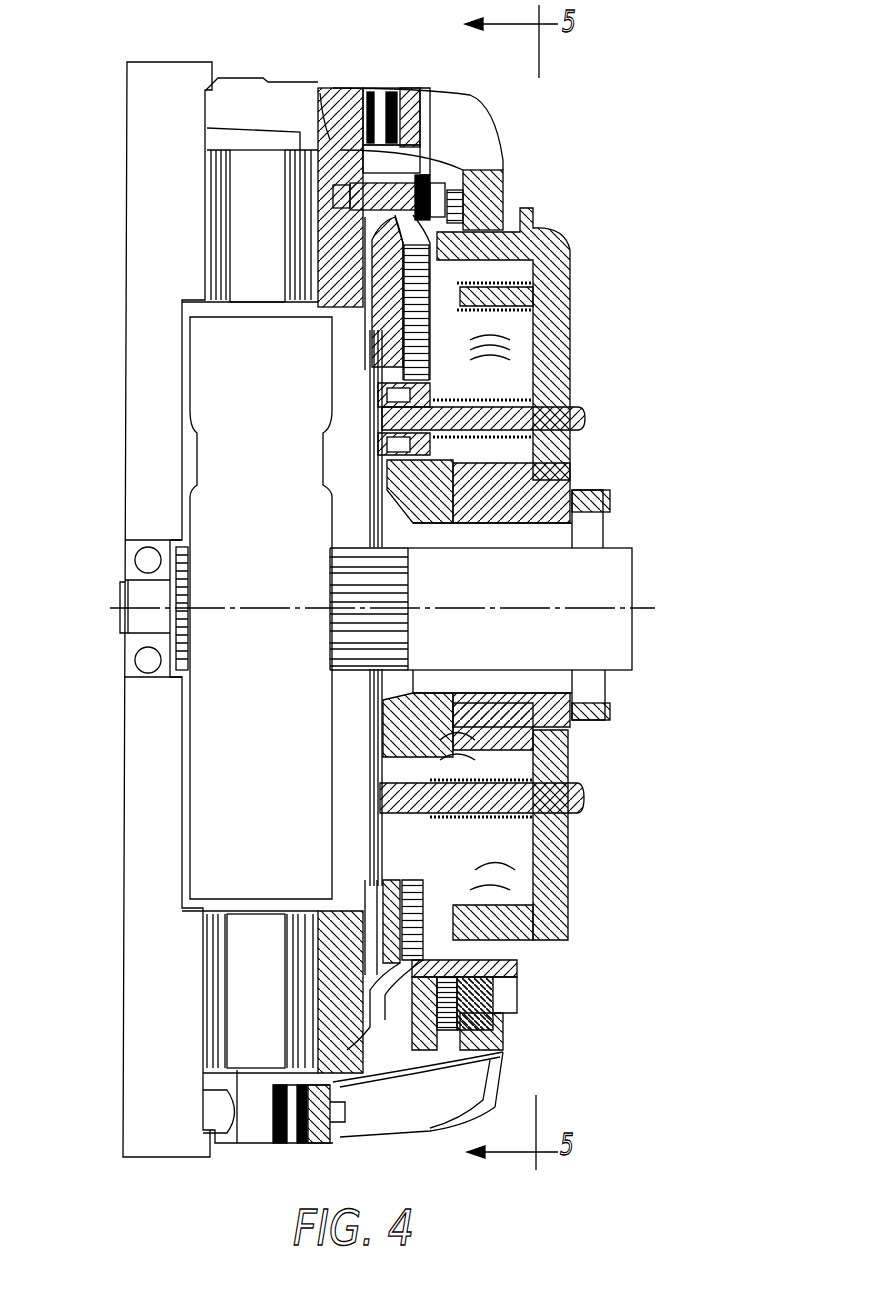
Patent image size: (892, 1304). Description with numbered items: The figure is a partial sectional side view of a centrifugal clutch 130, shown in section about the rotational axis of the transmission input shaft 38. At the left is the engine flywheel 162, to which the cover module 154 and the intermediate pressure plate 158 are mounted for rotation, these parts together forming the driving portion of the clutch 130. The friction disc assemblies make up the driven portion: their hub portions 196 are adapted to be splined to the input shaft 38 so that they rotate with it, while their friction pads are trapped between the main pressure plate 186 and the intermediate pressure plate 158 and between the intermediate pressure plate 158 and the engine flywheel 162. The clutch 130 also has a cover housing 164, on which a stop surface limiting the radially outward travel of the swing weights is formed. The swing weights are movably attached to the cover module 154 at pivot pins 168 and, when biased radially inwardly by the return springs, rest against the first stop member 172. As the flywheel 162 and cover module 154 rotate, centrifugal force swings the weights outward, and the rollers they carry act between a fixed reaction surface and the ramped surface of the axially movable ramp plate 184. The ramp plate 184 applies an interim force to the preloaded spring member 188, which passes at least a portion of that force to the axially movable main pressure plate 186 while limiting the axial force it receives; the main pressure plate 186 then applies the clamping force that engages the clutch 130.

The centrifugal clutch 130 is at (627, 110).
The engine flywheel 162 is at (148, 245).
The intermediate pressure plate 158 is at (253, 993).
The hub portions 196 is at (300, 135).
The main pressure plate 186 is at (357, 103).
The cover housing 164 is at (509, 147).
The cover module 154 is at (550, 227).
The first stop member 172 is at (572, 910).
The pivot pins 168 is at (574, 810).
The input shaft 38 is at (625, 583).
The ramp plate 184 is at (540, 977).
The preloaded spring member 188 is at (507, 1030).